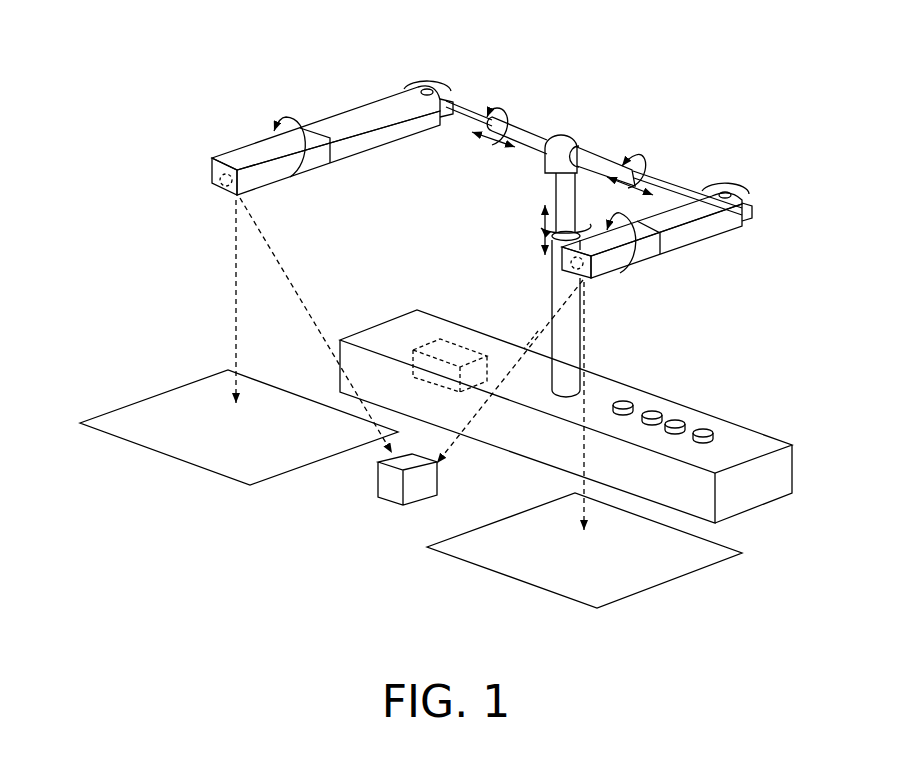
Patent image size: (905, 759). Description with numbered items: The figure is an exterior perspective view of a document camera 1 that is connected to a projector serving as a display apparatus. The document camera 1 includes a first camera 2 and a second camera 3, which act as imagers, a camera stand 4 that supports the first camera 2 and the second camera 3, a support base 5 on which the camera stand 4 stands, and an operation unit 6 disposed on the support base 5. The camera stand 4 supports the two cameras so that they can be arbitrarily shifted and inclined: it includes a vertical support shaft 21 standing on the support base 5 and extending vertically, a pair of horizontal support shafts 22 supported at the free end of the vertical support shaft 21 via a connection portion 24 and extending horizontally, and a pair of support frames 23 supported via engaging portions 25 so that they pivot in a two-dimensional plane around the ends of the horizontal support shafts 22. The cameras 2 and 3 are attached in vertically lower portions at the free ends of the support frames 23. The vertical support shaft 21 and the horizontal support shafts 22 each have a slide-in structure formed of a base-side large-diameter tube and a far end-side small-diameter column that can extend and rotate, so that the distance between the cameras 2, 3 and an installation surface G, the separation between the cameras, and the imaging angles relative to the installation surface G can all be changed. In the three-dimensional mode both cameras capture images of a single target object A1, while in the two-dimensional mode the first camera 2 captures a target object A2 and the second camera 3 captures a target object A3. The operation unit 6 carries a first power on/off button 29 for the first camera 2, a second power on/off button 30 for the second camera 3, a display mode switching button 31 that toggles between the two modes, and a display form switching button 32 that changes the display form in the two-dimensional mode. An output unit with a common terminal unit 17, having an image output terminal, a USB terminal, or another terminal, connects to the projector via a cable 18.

The document camera 1 is at (611, 84).
The first camera 2 is at (210, 164).
The second camera 3 is at (598, 281).
The camera stand 4 is at (668, 178).
The support base 5 is at (600, 383).
The operation unit 6 is at (699, 370).
The common terminal unit 17 is at (448, 344).
The cable 18 is at (531, 337).
The vertical support shaft 21 is at (551, 299).
The horizontal support shaft 22 is at (528, 135).
The support frame 23 is at (347, 114).
The connection portion 24 is at (563, 139).
The engaging portion 25 is at (427, 87).
The first power on/off button 29 is at (628, 401).
The second power on/off button 30 is at (656, 411).
The display mode switching button 31 is at (680, 421).
The display form switching button 32 is at (707, 429).
The target object A1 is at (412, 455).
The target object A2 is at (260, 383).
The target object A3 is at (721, 551).
The installation surface G is at (313, 540).